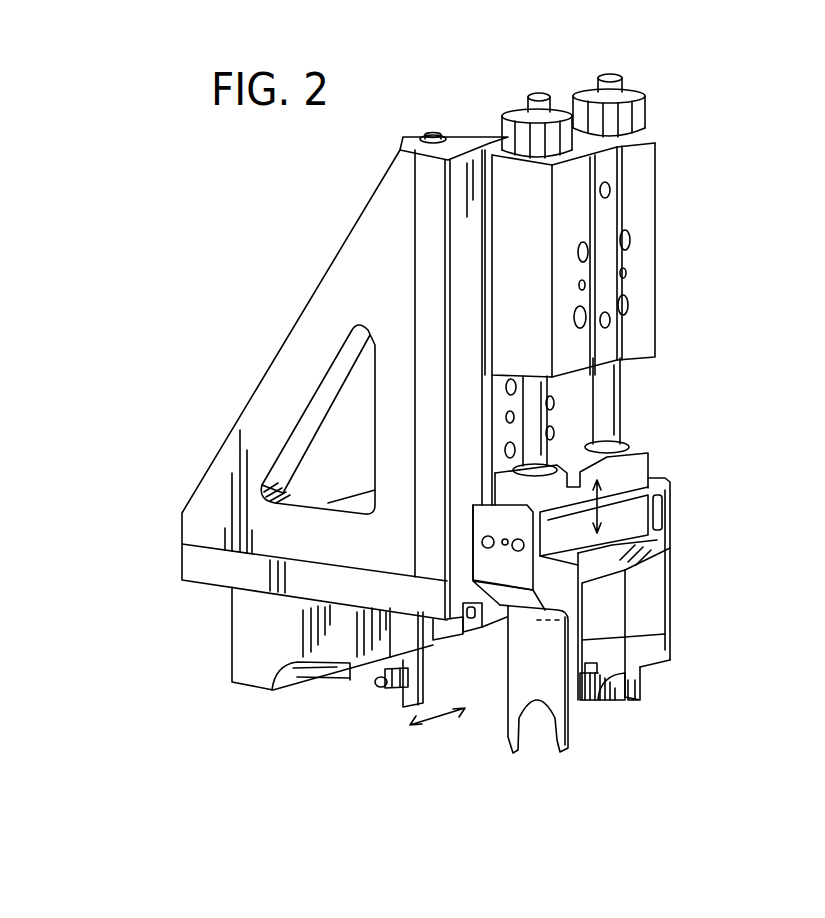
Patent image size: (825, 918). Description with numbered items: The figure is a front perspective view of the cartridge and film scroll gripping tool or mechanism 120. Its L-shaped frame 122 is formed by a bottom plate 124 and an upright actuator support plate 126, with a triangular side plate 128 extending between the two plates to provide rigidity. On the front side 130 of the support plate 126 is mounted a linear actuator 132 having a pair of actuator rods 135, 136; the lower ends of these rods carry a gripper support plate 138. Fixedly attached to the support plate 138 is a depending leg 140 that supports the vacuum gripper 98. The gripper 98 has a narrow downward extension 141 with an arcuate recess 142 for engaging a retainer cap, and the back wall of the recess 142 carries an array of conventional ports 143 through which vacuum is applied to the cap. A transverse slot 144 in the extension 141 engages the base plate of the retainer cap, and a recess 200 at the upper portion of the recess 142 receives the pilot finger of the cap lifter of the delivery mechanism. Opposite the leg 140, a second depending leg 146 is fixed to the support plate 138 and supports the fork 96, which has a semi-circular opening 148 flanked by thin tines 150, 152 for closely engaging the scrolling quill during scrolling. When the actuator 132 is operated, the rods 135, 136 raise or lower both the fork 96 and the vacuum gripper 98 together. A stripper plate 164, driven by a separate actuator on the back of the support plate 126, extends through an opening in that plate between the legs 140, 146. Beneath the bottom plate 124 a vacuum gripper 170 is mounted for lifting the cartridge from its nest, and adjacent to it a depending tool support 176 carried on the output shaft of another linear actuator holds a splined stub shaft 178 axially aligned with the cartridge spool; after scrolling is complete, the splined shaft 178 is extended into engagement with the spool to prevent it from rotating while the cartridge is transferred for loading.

The gripping tool or mechanism 120 is at (282, 283).
The L-shaped frame 122 is at (180, 563).
The bottom plate 124 is at (253, 578).
The actuator support plate 126 is at (472, 150).
The side plate 128 is at (290, 368).
The front side 130 is at (468, 387).
The linear actuator 132 is at (617, 362).
The actuator rod 135 is at (535, 97).
The actuator rod 136 is at (610, 70).
The gripper support plate 138 is at (633, 477).
The depending leg 140 is at (652, 587).
The downward extension 141 is at (640, 683).
The arcuate recess 142 is at (623, 663).
The ports 143 is at (598, 690).
The transverse slot 144 is at (632, 707).
The depending leg 146 is at (520, 657).
The semi-circular opening 148 is at (537, 747).
The tine 150 is at (508, 733).
The tine 152 is at (563, 747).
The stripper plate 164 is at (657, 547).
The vacuum gripper 170 is at (253, 660).
The tool support 176 is at (410, 703).
The splined stub shaft 178 is at (380, 686).
The recess 200 is at (585, 670).
The fork 96 is at (552, 694).
The vacuum gripper 98 is at (660, 647).